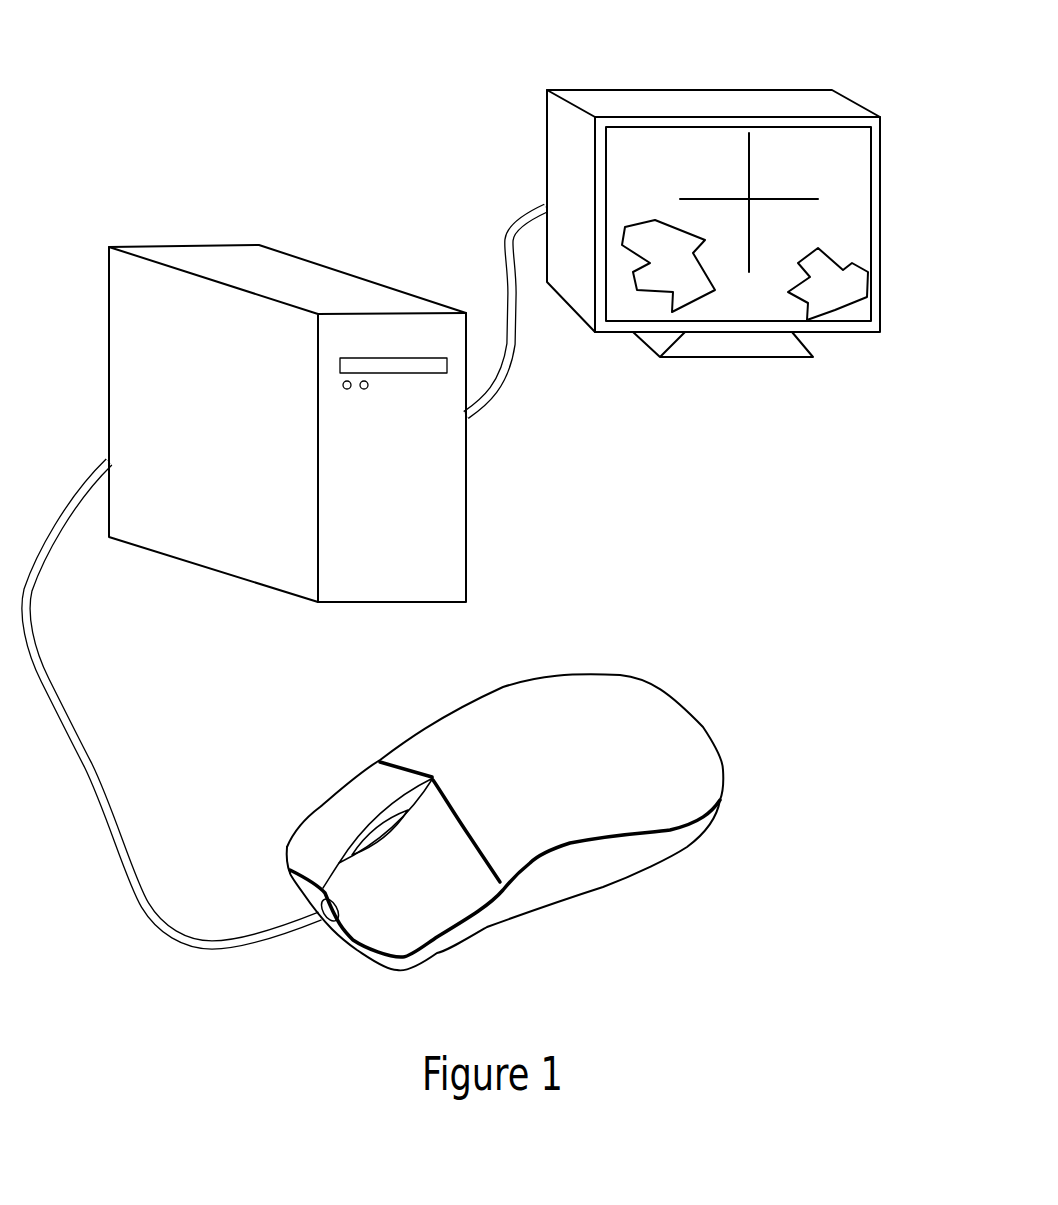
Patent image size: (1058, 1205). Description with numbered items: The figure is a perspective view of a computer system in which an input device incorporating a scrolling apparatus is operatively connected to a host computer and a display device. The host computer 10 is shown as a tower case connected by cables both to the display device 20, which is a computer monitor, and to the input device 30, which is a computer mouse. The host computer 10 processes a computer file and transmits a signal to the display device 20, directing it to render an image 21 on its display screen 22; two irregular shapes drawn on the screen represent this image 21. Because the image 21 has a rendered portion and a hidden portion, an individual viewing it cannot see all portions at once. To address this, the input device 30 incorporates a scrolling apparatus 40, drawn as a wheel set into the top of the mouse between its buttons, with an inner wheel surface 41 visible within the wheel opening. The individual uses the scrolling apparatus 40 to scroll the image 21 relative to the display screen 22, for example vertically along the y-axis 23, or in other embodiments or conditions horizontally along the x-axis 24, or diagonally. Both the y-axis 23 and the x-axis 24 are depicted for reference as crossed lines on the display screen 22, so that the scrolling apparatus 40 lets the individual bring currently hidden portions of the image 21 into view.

The host computer 10 is at (471, 509).
The display device 20 is at (713, 190).
The image 21 is at (655, 221).
The display screen 22 is at (842, 137).
The y-axis 23 is at (752, 166).
The x-axis 24 is at (761, 201).
The input device 30 is at (503, 822).
The scrolling apparatus 40 is at (350, 826).
The wheel surface 41 is at (377, 838).